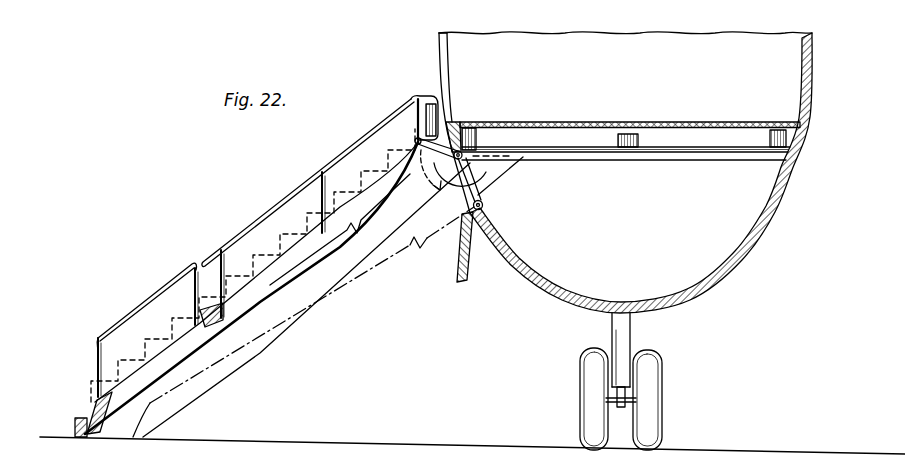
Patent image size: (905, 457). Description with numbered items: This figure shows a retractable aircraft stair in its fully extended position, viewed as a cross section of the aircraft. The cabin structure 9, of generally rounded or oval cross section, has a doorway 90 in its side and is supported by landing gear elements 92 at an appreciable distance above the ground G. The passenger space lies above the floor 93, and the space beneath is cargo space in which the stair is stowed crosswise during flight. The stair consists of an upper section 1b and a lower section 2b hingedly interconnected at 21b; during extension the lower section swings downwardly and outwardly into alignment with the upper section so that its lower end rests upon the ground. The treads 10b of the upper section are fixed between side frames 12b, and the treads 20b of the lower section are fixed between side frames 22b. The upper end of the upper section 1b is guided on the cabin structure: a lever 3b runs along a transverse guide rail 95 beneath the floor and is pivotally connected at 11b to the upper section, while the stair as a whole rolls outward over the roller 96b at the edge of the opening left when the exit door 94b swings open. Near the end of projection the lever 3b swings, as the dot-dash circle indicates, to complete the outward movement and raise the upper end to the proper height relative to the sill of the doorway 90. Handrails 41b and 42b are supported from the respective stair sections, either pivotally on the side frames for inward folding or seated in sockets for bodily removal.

The upper section 1b is at (270, 264).
The lower section 2b is at (166, 352).
The lever 3b is at (456, 124).
The cabin structure 9 is at (726, 274).
The treads 10b is at (392, 178).
The pivotal connection 11b is at (407, 115).
The side frames 12b is at (347, 252).
The treads 20b is at (95, 389).
The hinge 21b is at (250, 345).
The side frames 22b is at (166, 350).
The handrail 41b is at (304, 182).
The handrail 42b is at (183, 268).
The doorway 90 is at (441, 37).
The landing gear elements 92 is at (630, 340).
The floor 93 is at (542, 124).
The exit door 94b is at (468, 272).
The guide rail 95 is at (680, 162).
The roller 96b is at (484, 206).
The ground G is at (418, 447).